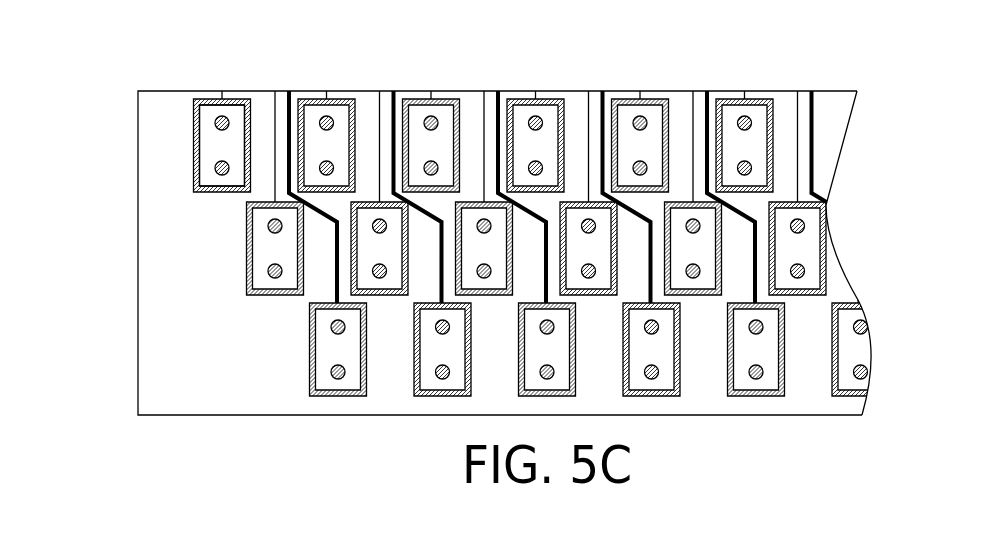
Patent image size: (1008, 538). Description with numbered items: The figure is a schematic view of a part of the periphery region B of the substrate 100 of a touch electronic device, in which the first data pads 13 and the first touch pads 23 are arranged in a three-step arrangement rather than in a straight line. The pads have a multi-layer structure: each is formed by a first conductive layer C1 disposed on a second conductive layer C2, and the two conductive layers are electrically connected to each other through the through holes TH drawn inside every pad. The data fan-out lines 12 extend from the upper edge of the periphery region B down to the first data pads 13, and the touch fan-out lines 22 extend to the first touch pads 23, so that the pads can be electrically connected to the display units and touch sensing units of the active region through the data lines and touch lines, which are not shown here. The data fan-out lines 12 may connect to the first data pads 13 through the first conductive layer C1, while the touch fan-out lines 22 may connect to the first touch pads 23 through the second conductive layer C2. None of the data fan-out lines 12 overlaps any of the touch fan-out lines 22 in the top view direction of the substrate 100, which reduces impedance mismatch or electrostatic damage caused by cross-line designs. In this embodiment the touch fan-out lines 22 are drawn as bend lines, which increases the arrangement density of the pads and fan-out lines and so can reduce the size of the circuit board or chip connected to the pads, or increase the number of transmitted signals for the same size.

The substrate 100 is at (477, 255).
The periphery region B is at (150, 395).
The data fan-out lines 12 is at (158, 98).
The first data pads 13 is at (274, 288).
The touch fan-out lines 22 is at (277, 91).
The first touch pads 23 is at (333, 383).
The through holes TH is at (215, 125).
The first conductive layer C1 is at (204, 150).
The second conductive layer C2 is at (201, 183).